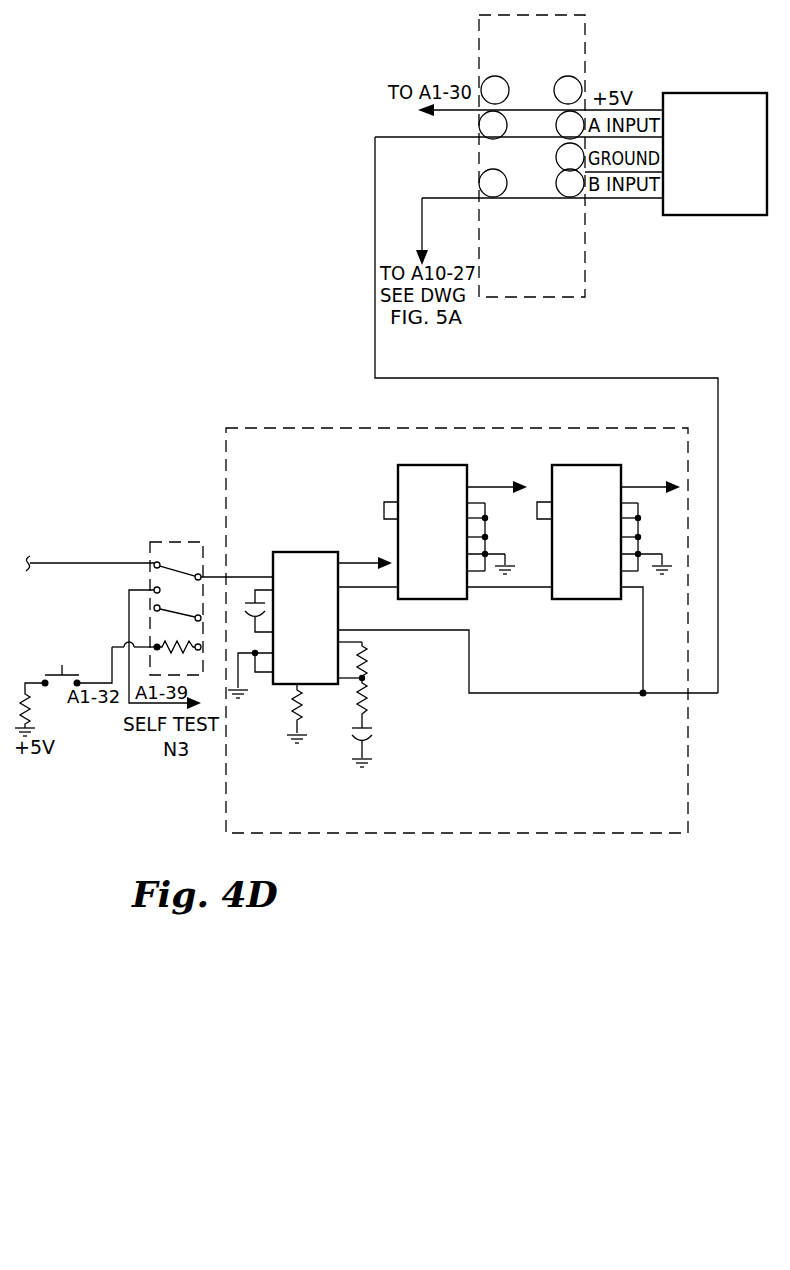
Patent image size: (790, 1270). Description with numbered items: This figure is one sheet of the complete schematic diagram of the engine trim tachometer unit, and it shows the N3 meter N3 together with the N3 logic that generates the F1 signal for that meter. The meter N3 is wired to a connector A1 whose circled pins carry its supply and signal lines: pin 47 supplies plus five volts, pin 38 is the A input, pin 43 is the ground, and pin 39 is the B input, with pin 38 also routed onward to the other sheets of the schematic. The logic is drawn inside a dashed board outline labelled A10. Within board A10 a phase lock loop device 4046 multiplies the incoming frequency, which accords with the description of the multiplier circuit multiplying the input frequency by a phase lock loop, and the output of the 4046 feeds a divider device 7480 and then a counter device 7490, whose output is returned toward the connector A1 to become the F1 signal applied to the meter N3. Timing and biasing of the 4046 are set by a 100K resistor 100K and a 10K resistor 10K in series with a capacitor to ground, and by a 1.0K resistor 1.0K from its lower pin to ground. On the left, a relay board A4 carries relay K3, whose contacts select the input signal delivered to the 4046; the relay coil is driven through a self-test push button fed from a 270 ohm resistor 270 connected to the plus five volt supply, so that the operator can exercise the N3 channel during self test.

The connector A1 is at (532, 148).
The connector pin 47 (+5V) 47 is at (531, 90).
The connector pin 38 (A input) 38 is at (531, 125).
The connector pin 43 (ground) 43 is at (570, 157).
The connector pin 39 (B input) 39 is at (531, 183).
The N3 meter N3 is at (715, 154).
The circuit board A10 is at (457, 646).
The 7480 integrated circuit 7480 is at (455, 520).
The 7490 counter integrated circuit 7490 is at (608, 569).
The 4046 phase-locked loop integrated circuit 4046 is at (473, 613).
The 100K resistor 100K is at (387, 661).
The 10K resistor 10K is at (379, 722).
The 1.0K resistor 1.0K is at (316, 713).
The relay board A4 is at (176, 595).
The relay K3 is at (180, 610).
The 270 ohm resistor 270 is at (39, 713).